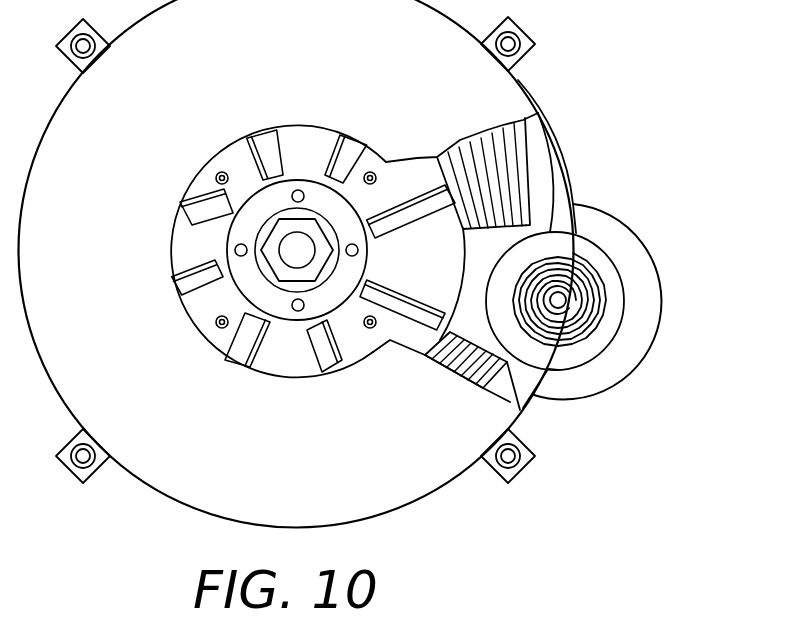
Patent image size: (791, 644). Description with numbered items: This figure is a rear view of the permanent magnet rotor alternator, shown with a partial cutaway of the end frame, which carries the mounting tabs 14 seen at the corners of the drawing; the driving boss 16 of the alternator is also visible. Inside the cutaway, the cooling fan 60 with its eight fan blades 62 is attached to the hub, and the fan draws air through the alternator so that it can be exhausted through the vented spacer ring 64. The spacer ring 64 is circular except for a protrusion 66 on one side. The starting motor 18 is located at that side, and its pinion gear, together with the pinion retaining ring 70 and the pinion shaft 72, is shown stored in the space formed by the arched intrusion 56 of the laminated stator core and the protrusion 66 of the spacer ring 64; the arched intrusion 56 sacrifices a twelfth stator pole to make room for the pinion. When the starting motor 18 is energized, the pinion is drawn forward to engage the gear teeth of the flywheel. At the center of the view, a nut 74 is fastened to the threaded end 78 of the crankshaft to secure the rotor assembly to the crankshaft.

The tabs 14 is at (523, 43).
The driving boss 16 is at (257, 283).
The starting motor 18 is at (610, 240).
The arched intrusion 56 is at (478, 296).
The cooling fan 60 is at (416, 180).
The fan blades 62 is at (327, 352).
The spacer ring 64 is at (552, 180).
The protrusion 66 is at (618, 295).
The pinion retaining ring 70 is at (555, 313).
The pinion shaft 72 is at (566, 302).
The nut 74 is at (305, 225).
The threaded end 78 is at (290, 248).